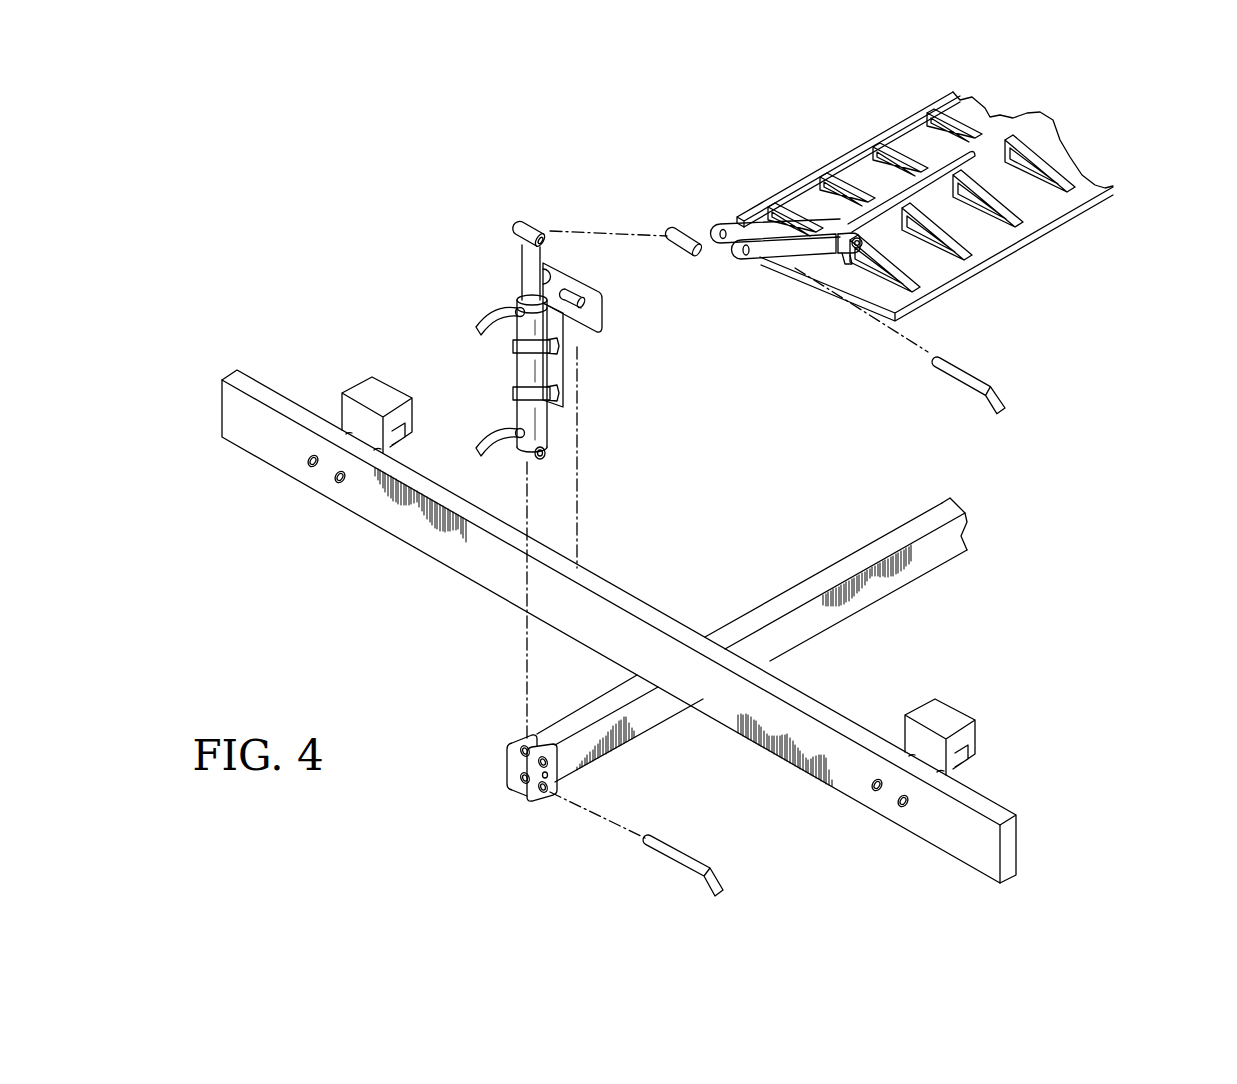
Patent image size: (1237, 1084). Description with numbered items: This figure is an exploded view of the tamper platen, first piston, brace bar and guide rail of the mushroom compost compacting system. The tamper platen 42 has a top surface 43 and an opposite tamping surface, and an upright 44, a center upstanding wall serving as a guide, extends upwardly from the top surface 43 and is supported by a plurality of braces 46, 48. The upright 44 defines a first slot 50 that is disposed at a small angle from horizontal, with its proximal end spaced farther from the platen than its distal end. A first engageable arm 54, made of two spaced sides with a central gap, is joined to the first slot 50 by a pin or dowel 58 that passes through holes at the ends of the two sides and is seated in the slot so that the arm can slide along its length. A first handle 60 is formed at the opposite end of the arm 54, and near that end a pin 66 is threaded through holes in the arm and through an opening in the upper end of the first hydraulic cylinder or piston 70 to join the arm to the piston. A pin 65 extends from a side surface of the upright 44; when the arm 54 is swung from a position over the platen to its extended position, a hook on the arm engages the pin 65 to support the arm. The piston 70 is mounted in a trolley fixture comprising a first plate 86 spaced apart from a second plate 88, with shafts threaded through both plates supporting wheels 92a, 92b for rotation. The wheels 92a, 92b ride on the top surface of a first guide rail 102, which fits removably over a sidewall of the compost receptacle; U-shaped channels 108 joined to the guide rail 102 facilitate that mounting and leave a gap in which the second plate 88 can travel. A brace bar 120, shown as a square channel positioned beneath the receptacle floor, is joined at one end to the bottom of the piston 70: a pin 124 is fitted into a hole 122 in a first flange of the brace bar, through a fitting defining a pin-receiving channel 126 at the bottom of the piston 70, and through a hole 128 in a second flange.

The tamper platen 42 is at (976, 206).
The top surface 43 is at (867, 167).
The upright 44 is at (1007, 122).
The braces 46 is at (940, 112).
The braces 48 is at (1086, 199).
The first slot 50 is at (928, 182).
The first engageable arm 54 is at (790, 254).
The pin or dowel 58 is at (898, 222).
The first handle 60 is at (671, 233).
The pin 65 is at (850, 250).
The pin 66 is at (958, 375).
The first hydraulic cylinder or piston 70 is at (527, 253).
The first plate 86 is at (631, 287).
The second plate 88 is at (553, 370).
The wheel 92a is at (582, 297).
The wheel 92b is at (561, 275).
The first guide rail 102 is at (987, 808).
The U-shaped channels 108 is at (365, 388).
The brace bar 120 is at (825, 578).
The holes 122 is at (488, 796).
The pin 124 is at (700, 860).
The pin-receiving channel 126 is at (547, 453).
The holes 128 is at (523, 764).